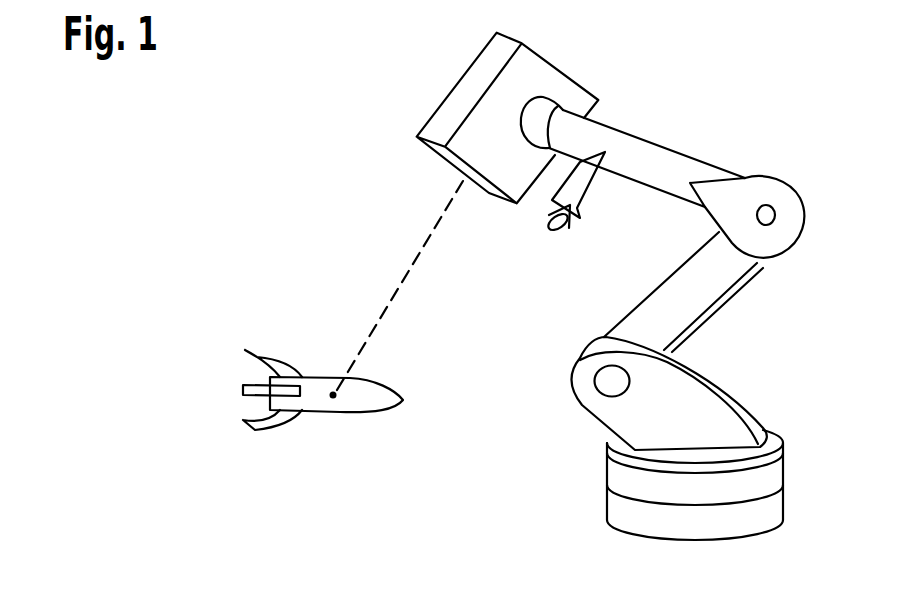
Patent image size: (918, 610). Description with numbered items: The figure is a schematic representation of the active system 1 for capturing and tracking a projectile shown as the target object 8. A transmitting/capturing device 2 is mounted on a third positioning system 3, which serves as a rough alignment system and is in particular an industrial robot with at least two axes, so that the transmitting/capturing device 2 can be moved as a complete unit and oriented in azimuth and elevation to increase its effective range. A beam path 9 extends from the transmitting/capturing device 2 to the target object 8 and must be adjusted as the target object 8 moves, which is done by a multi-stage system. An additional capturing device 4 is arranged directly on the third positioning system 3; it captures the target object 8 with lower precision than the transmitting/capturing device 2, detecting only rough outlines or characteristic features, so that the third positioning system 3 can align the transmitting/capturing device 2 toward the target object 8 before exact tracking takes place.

The active system 1 is at (247, 192).
The transmitting/capturing device 2 is at (468, 92).
The third positioning system 3 is at (670, 174).
The additional capturing device 4 is at (592, 197).
The target object 8 is at (315, 395).
The beam path 9 is at (383, 309).